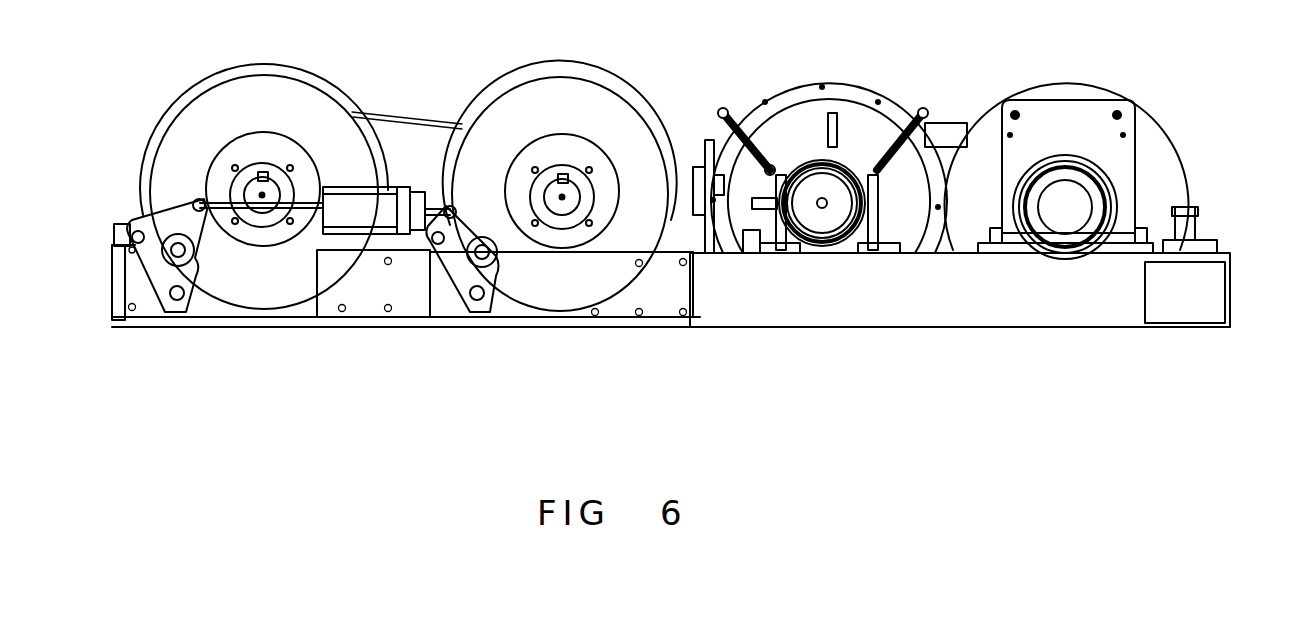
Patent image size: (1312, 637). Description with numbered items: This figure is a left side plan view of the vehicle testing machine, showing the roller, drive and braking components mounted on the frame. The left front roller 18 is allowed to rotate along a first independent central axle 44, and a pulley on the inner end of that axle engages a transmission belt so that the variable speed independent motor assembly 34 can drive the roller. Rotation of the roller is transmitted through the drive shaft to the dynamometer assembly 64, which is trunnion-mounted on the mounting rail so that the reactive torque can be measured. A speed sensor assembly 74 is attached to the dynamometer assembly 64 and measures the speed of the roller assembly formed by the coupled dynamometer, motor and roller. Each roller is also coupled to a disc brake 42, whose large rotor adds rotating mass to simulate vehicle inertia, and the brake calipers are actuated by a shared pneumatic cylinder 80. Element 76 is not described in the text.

The left front roller 18 is at (185, 262).
The independent motor assembly 34 is at (1152, 152).
The disc brake 42 is at (557, 268).
The first independent central axle 44 is at (262, 195).
The dynamometer assembly 64 is at (845, 107).
The speed sensor assembly 74 is at (757, 202).
The mounting bracket 76 is at (770, 175).
The pneumatic cylinder 80 is at (313, 237).